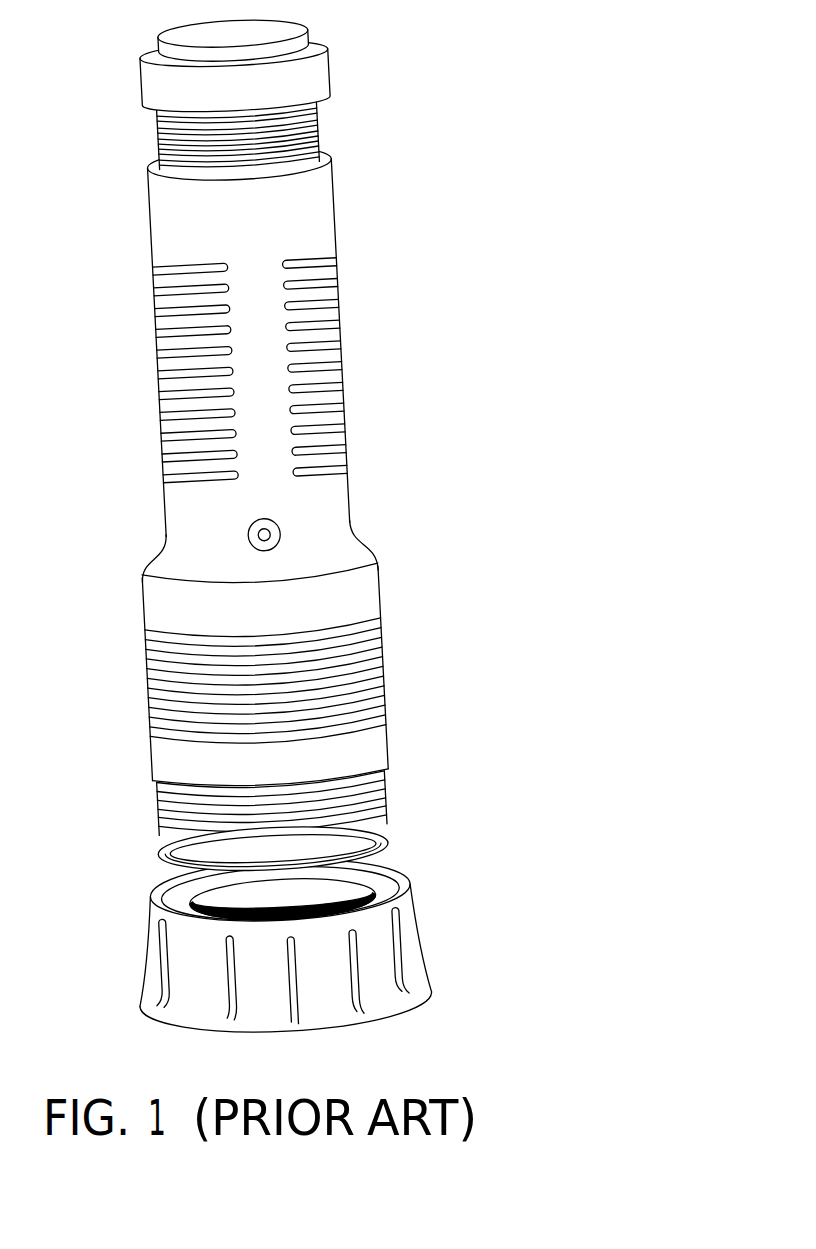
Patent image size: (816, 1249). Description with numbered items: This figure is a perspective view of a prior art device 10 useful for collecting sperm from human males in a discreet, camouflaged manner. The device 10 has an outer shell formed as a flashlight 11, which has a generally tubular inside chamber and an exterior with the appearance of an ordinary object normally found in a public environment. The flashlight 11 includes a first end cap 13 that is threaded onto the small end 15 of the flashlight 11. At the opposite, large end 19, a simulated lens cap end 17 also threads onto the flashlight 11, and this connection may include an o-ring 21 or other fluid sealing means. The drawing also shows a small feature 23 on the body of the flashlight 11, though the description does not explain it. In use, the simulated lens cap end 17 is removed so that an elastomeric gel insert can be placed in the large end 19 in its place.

The device 10 is at (282, 527).
The flashlight 11 is at (363, 597).
The first end cap 13 is at (307, 83).
The small end 15 is at (175, 211).
The simulated lens cap end 17 is at (408, 948).
The large end 19 is at (168, 757).
The o-ring 21 is at (160, 860).
The hole 23 is at (282, 529).